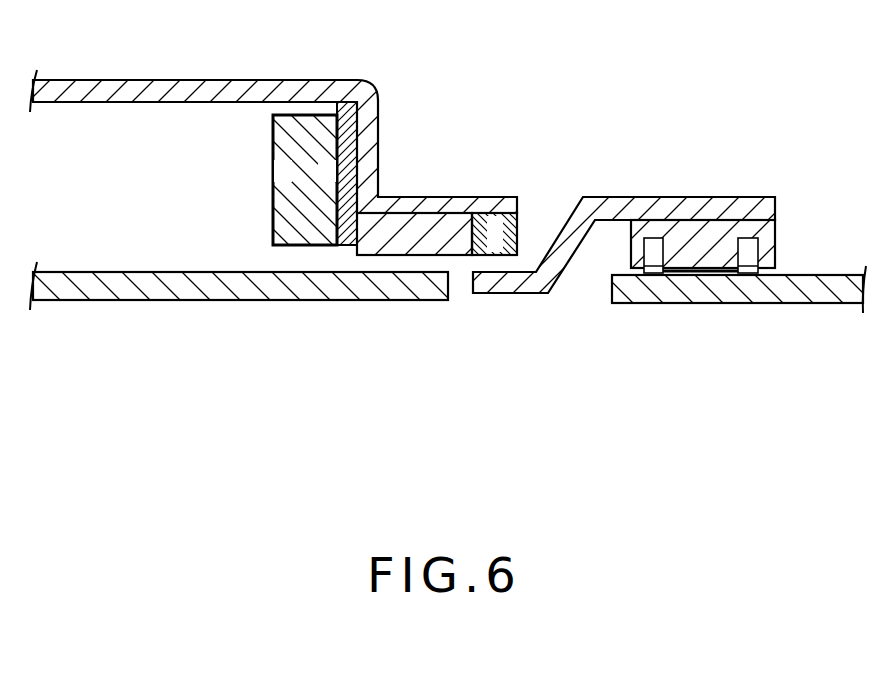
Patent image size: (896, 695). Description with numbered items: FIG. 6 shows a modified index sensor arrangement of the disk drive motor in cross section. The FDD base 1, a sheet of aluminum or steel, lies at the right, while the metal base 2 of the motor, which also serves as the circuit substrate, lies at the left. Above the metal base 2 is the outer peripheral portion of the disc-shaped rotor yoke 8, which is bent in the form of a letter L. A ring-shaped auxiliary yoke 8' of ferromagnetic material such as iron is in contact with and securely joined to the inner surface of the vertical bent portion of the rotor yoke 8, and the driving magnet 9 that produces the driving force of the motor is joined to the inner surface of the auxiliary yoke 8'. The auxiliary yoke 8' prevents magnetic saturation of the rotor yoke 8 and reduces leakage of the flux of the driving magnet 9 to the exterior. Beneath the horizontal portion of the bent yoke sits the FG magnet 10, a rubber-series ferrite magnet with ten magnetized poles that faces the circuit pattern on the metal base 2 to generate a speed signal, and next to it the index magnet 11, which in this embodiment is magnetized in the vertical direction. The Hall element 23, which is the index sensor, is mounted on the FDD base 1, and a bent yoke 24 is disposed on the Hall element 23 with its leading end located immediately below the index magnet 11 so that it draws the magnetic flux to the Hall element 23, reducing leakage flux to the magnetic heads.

The FDD base 1 is at (794, 296).
The metal base 2 is at (274, 288).
The rotor yoke 8 is at (273, 115).
The auxiliary yoke 8' is at (388, 171).
The driving magnet 9 is at (276, 201).
The FG magnet 10 is at (427, 238).
The index magnet 11 is at (520, 228).
The Hall element 23 is at (767, 233).
The yoke 24 is at (738, 207).